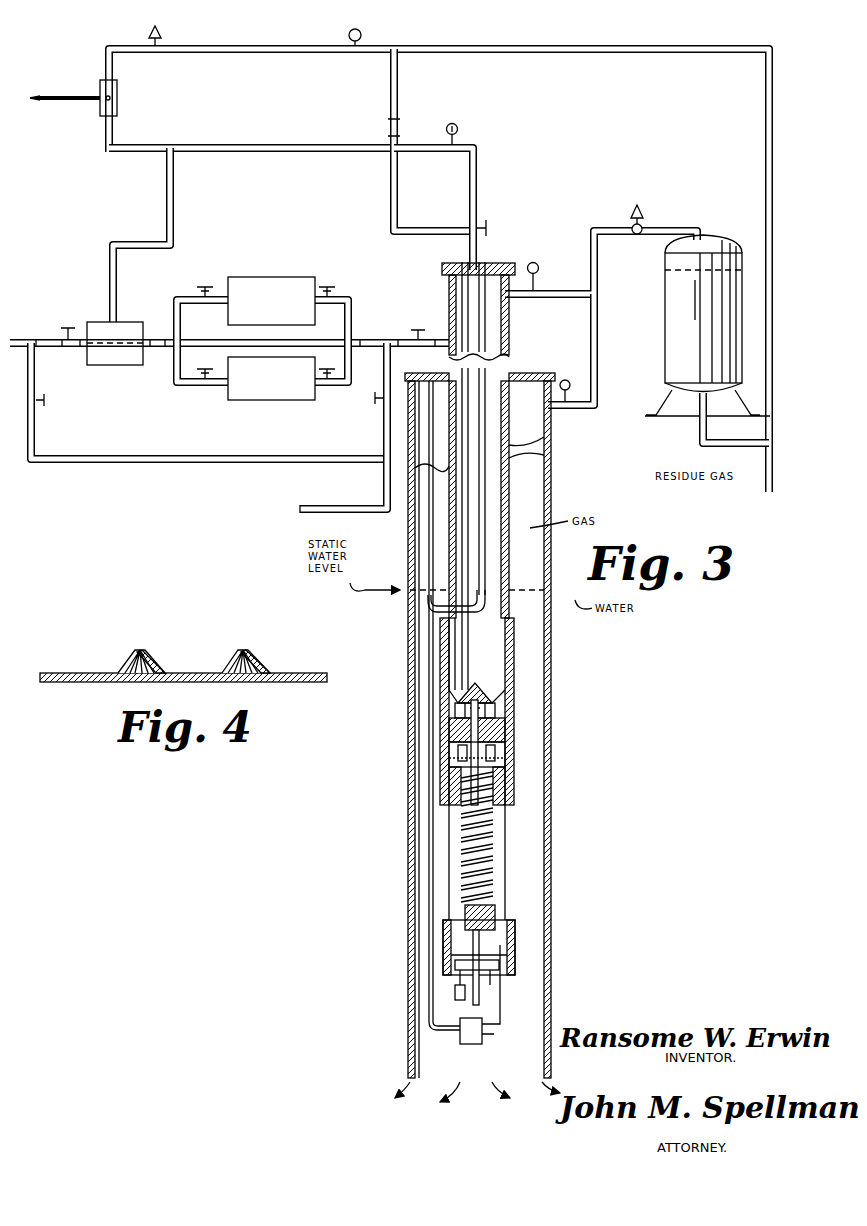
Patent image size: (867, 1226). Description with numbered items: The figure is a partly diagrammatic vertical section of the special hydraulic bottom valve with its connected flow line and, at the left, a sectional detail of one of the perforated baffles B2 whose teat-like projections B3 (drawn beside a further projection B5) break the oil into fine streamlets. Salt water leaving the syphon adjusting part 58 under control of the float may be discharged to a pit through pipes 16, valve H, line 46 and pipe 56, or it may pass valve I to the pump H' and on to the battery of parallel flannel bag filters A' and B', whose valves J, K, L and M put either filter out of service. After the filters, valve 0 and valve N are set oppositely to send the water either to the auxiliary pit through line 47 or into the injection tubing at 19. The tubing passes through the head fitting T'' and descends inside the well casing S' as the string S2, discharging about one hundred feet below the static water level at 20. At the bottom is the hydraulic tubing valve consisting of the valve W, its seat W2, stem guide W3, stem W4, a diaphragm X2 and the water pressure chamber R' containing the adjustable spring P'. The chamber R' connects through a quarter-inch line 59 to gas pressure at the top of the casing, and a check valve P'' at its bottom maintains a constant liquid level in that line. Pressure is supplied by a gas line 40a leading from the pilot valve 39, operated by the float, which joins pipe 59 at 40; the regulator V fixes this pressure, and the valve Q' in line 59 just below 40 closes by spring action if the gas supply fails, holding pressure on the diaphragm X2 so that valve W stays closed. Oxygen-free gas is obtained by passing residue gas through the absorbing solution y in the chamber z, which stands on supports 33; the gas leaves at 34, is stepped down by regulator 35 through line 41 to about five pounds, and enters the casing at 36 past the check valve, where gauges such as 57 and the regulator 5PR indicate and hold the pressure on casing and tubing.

In FIG. 3, the gas feed line 40a is at (296, 138).
In FIG. 3, the gas line 41 is at (430, 140).
In FIG. 3, the connection point 40 is at (446, 193).
In FIG. 3, the pilot valve 39 is at (100, 195).
In FIG. 3, the regulator V is at (162, 31).
In FIG. 3, the syphon adjusting part 58 is at (377, 25).
In FIG. 3, the valve Q' is at (500, 230).
In FIG. 3, the pipe 16 is at (20, 338).
In FIG. 3, the valve I is at (68, 322).
In FIG. 3, the pump H' is at (116, 327).
In FIG. 3, the flannel bag filter A' is at (262, 329).
In FIG. 3, the flannel bag filter B' is at (271, 378).
In FIG. 3, the valve K is at (205, 278).
In FIG. 3, the valve M is at (330, 278).
In FIG. 3, the valve J is at (205, 357).
In FIG. 3, the valve L is at (327, 357).
In FIG. 3, the line 46 is at (207, 418).
In FIG. 3, the valve H is at (49, 398).
In FIG. 3, the line 47 is at (343, 426).
In FIG. 3, the valve N is at (369, 398).
In FIG. 3, the pipe 56 is at (284, 510).
In FIG. 3, the valve 0 is at (412, 326).
In FIG. 3, the injection tubing inlet 19 is at (432, 312).
In FIG. 3, the gas outlet 34 is at (619, 247).
In FIG. 3, the regulator 35 is at (639, 230).
In FIG. 3, the gas connection 36 is at (549, 273).
In FIG. 3, the pressure regulator 5PR is at (600, 430).
In FIG. 3, the pressure gauge 57 is at (571, 349).
In FIG. 3, the oxygen absorbing solution y is at (665, 320).
In FIG. 3, the chamber z is at (680, 366).
In FIG. 3, the tank support 33 is at (707, 416).
In FIG. 3, the tubing head fitting T'' is at (461, 311).
In FIG. 3, the well casing S' is at (494, 729).
In FIG. 3, the tubing string S2 is at (530, 490).
In FIG. 3, the gas pressure line 59 is at (520, 503).
In FIG. 3, the check valve P'' is at (428, 729).
In FIG. 3, the discharge point 20 is at (512, 693).
In FIG. 3, the valve W is at (483, 690).
In FIG. 3, the seat W2 is at (497, 710).
In FIG. 3, the stem W4 is at (500, 720).
In FIG. 3, the stem guide W3 is at (505, 735).
In FIG. 3, the diaphragm X2 is at (505, 772).
In FIG. 3, the spring P' is at (525, 851).
In FIG. 3, the water pressure chamber R' is at (524, 955).
In FIG. 4, the bump of plate B5 is at (138, 650).
In FIG. 4, the teat-like projection B3 is at (246, 650).
In FIG. 4, the baffle B2 is at (208, 673).